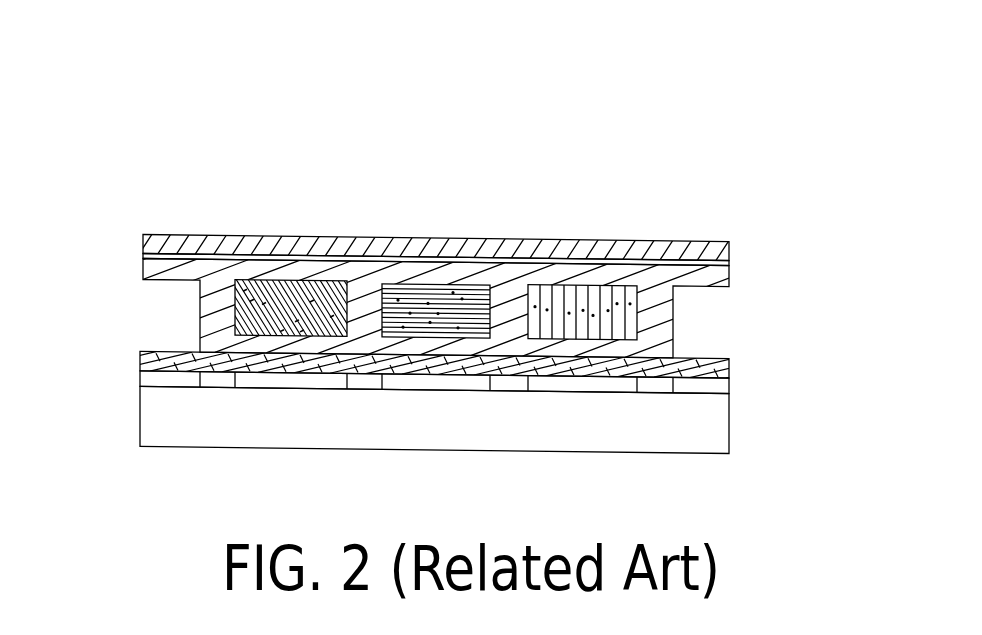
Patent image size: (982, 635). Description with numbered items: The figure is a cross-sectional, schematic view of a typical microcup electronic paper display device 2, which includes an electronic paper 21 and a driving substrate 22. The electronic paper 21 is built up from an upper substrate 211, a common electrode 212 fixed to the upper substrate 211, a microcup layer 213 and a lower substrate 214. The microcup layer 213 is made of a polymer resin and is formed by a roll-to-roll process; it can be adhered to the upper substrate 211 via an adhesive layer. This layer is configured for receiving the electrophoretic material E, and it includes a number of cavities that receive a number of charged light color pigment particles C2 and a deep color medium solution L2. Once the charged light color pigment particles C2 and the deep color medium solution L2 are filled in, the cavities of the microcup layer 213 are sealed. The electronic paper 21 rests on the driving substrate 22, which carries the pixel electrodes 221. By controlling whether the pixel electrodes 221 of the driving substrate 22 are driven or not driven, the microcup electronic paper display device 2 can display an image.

The microcup electronic paper display device 2 is at (192, 56).
The electronic paper 21 is at (427, 228).
The upper substrate 211 is at (537, 249).
The common electrode 212 is at (198, 257).
The microcup layer 213 is at (656, 278).
The deep color medium solution L2 is at (275, 279).
The charged light color pigment particles C2 is at (413, 292).
The electrophoretic material E is at (739, 267).
The driving substrate 22 is at (446, 430).
The lower substrate 214 is at (728, 367).
The pixel electrodes 221 is at (440, 383).